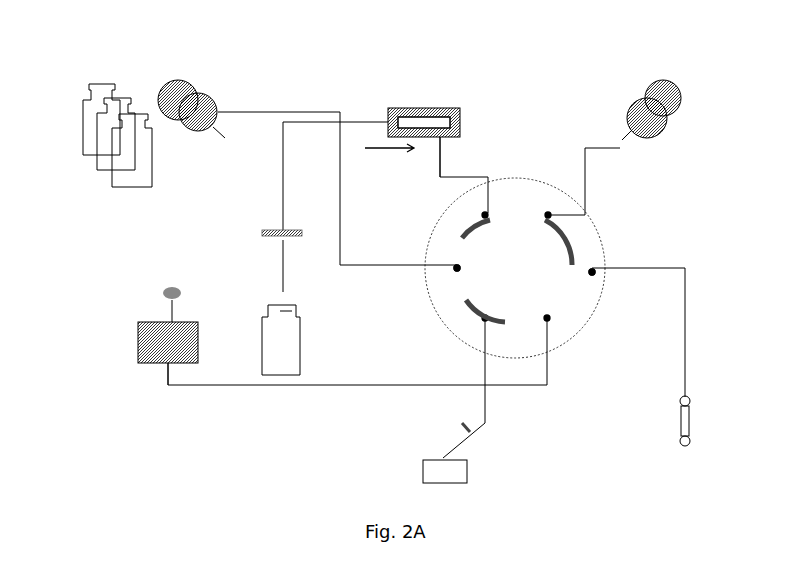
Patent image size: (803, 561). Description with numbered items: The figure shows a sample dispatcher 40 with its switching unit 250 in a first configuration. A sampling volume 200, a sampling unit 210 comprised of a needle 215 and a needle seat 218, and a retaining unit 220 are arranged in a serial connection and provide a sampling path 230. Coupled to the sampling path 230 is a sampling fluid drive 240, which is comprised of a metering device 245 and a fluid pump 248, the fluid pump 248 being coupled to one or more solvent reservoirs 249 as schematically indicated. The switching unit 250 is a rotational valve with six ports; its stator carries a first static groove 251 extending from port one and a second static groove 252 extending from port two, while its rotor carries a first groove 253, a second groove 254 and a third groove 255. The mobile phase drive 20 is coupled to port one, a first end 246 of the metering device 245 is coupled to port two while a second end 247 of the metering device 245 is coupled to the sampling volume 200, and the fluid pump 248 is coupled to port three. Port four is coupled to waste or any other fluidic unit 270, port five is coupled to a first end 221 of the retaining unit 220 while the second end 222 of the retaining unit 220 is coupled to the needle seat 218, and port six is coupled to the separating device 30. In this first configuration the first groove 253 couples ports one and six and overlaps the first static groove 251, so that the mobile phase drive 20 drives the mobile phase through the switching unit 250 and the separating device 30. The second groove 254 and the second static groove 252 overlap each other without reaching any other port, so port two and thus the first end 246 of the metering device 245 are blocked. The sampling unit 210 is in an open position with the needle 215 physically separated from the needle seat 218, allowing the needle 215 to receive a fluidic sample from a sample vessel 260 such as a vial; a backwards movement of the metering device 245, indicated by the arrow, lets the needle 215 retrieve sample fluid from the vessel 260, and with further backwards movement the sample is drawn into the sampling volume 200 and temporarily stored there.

The mobile phase drive 20 is at (678, 95).
The separating device 30 is at (688, 420).
The sample dispatcher 40 is at (593, 70).
The sampling volume 200 is at (268, 230).
The sampling unit 210 is at (138, 268).
The needle 215 is at (283, 272).
The needle seat 218 is at (177, 290).
The retaining unit 220 is at (140, 340).
The first end of the retaining unit 221 is at (168, 372).
The second end of the retaining unit 222 is at (170, 318).
The sampling path 230 is at (198, 432).
The sampling fluid drive 240 is at (338, 78).
The metering device 245 is at (428, 118).
The first end of the metering device 246 is at (440, 137).
The second end of the metering device 247 is at (388, 122).
The fluid pump 248 is at (183, 88).
The solvent reservoirs 249 is at (94, 185).
The switching unit 250 is at (595, 218).
The first static groove 251 is at (555, 225).
The second static groove 252 is at (470, 232).
The first groove 253 is at (570, 300).
The second groove 254 is at (470, 235).
The third groove 255 is at (507, 322).
The sample vessel 260 is at (294, 345).
The waste 270 is at (462, 473).